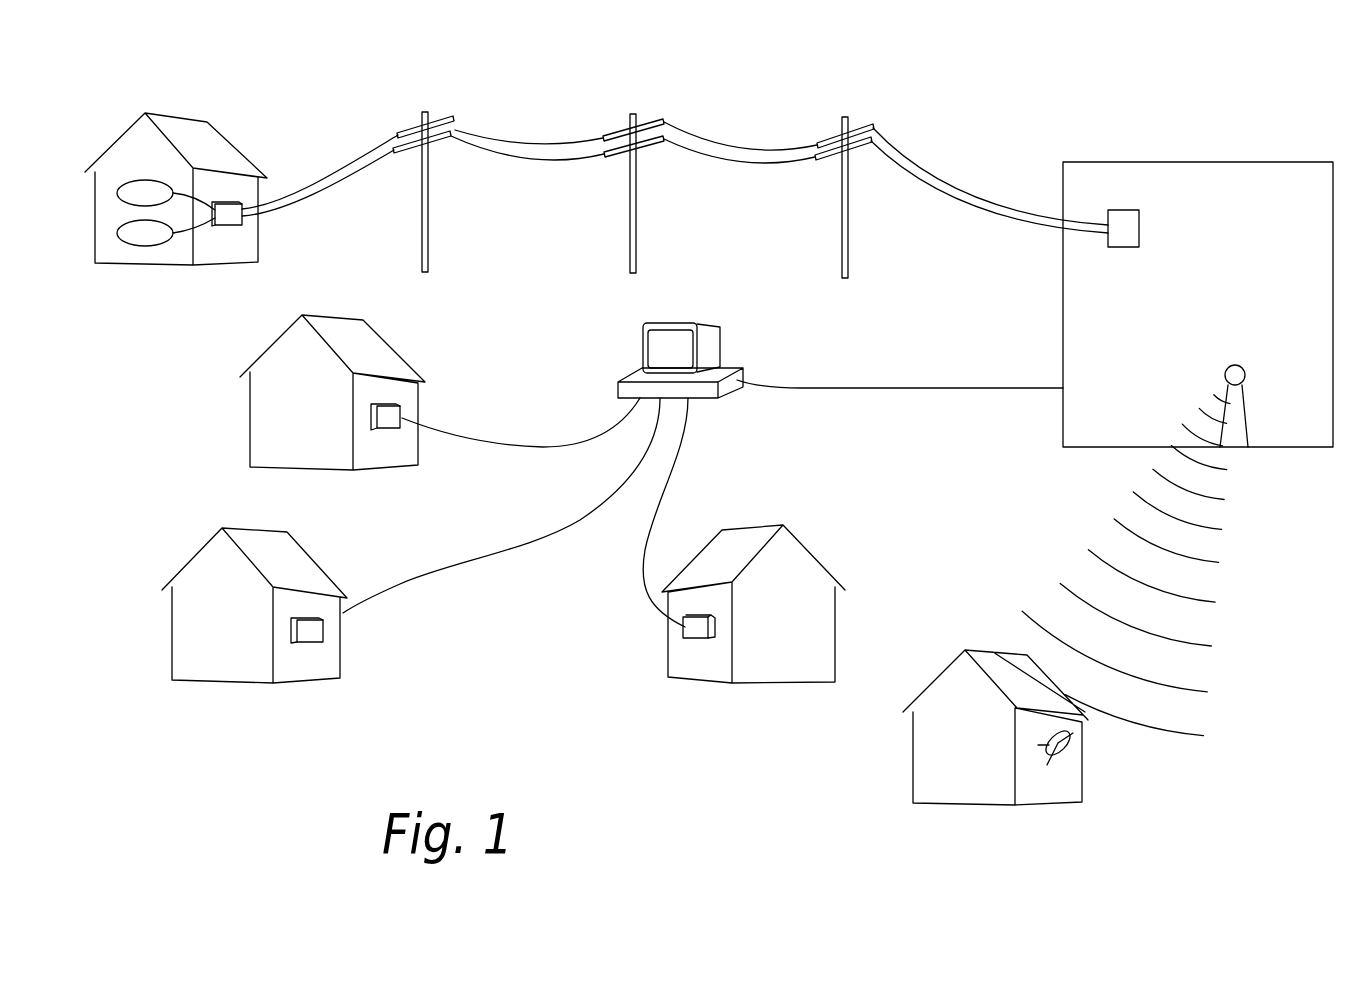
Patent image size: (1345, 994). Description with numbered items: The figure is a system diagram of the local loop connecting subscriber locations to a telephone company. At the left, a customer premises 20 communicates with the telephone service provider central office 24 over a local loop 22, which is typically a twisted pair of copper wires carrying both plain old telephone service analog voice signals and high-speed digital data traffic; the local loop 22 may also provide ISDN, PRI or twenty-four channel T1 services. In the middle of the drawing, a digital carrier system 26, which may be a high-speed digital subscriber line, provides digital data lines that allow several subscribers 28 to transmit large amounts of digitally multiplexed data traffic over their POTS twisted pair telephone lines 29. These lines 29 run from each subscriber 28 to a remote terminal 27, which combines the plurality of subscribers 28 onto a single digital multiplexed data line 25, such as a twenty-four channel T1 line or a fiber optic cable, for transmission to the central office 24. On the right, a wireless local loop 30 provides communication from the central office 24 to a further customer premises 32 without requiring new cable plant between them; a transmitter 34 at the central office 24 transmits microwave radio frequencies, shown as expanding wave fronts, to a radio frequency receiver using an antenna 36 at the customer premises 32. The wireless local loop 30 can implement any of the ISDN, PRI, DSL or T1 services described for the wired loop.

The customer premises 20 is at (134, 281).
The local loop 22 is at (538, 128).
The telephone service provider central office 24 is at (1267, 150).
The digital multiplexed data line 25 is at (918, 385).
The digital carrier system 26 is at (768, 367).
The remote terminal 27 is at (643, 342).
The subscribers 28 is at (228, 415).
The POTS twisted pair telephone line 29 is at (530, 543).
The wireless local loop 30 is at (1065, 560).
The customer premises 32 is at (979, 756).
The transmitter 34 is at (1213, 373).
The antenna 36 is at (1063, 765).